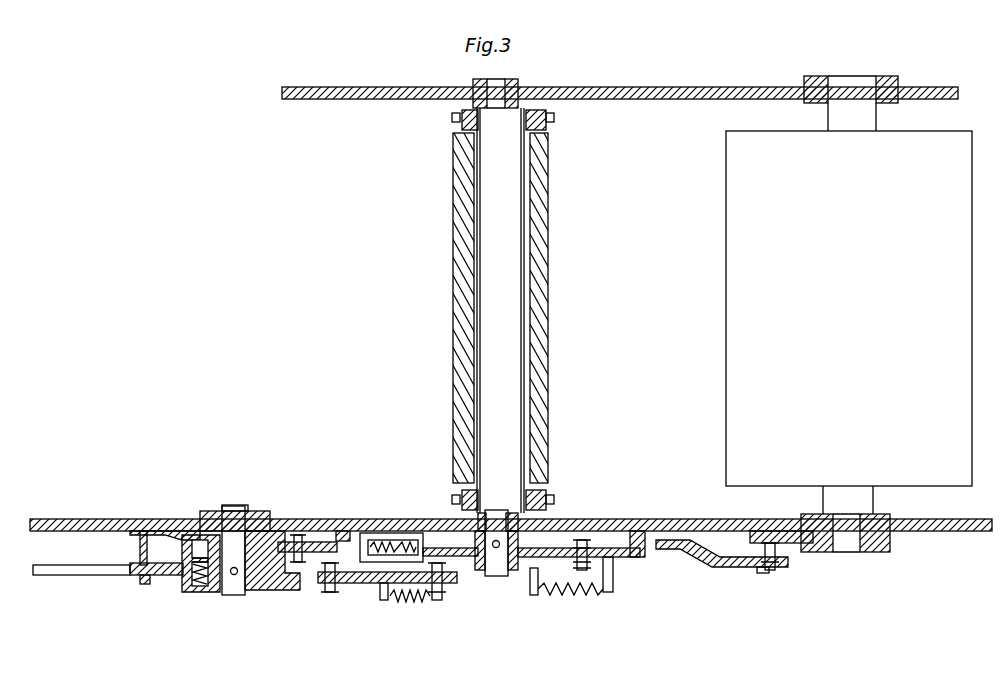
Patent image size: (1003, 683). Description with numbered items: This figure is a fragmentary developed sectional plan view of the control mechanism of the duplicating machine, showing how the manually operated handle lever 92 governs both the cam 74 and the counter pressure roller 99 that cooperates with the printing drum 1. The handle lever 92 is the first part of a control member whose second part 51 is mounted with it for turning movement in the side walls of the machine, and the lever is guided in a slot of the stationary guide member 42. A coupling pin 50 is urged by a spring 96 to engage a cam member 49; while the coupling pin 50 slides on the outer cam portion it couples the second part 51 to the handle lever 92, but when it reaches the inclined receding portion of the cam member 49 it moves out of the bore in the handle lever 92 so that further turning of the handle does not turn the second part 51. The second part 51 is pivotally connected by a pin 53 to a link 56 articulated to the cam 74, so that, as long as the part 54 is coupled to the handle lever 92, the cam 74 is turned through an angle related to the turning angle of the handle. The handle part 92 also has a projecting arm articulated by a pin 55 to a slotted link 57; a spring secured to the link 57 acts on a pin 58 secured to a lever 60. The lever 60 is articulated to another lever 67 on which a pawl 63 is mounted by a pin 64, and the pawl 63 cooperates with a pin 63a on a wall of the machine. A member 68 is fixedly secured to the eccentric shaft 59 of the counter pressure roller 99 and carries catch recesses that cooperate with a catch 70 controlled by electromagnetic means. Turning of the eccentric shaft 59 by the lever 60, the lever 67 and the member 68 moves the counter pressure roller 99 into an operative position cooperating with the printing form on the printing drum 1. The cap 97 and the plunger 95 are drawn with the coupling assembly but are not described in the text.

The printing drum 1 is at (752, 284).
The counter pressure roller 99 is at (537, 426).
The cap nut 97 is at (219, 511).
The cam member 49 is at (180, 523).
The coupling pin 50 is at (196, 526).
The second part of control member 51 is at (266, 514).
The pin 53 is at (303, 531).
The part 54 is at (236, 587).
The pin 55 is at (330, 584).
The link 56 is at (342, 531).
The link 57 is at (352, 584).
The pin 58 is at (437, 586).
The shaft 59 is at (497, 560).
The lever 60 is at (470, 558).
The pawl 63 is at (622, 560).
The pin 63a is at (640, 535).
The pin 64 is at (606, 580).
The lever 67 is at (564, 593).
The member 68 is at (550, 545).
The catch 70 is at (420, 531).
The cam 74 is at (795, 560).
The handle lever 92 is at (110, 573).
The plunger 95 is at (200, 585).
The spring 96 is at (188, 580).
The guide member 42 is at (146, 583).